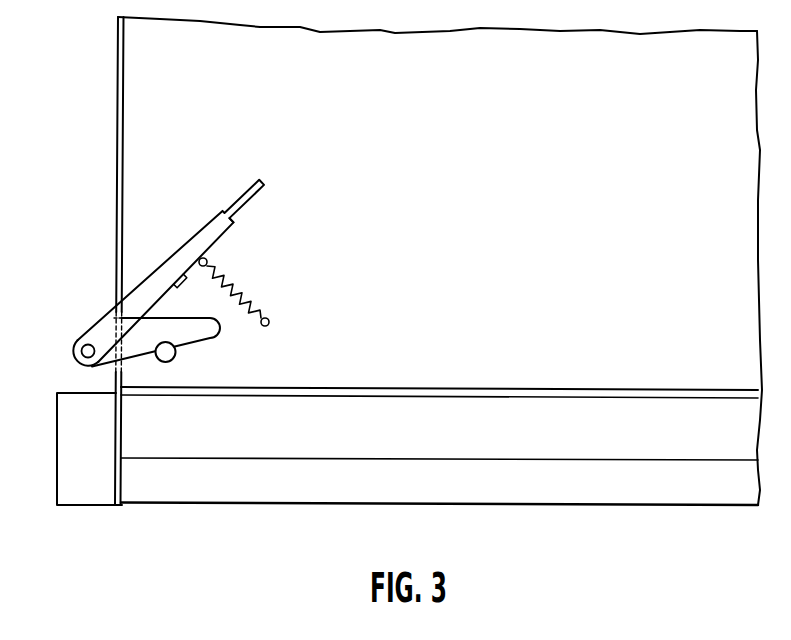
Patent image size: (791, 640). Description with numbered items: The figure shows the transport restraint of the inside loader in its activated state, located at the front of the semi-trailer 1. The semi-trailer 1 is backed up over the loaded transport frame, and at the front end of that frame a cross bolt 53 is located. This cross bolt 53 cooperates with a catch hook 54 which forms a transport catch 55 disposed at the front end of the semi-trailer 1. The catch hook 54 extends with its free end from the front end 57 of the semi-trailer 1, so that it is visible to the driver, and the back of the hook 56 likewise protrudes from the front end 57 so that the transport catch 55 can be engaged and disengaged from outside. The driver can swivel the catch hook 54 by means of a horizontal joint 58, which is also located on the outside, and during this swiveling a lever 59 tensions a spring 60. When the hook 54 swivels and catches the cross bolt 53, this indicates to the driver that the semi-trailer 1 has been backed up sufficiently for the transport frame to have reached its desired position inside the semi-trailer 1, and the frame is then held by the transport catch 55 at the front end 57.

The semi-trailer 1 is at (102, 99).
The cross bolt 53 is at (166, 362).
The catch hook 54 is at (208, 338).
The transport catch 55 is at (184, 205).
The back of the hook 56 is at (77, 367).
The front end 57 is at (117, 172).
The horizontal joint 58 is at (88, 344).
The lever 59 is at (231, 224).
The spring 60 is at (257, 298).